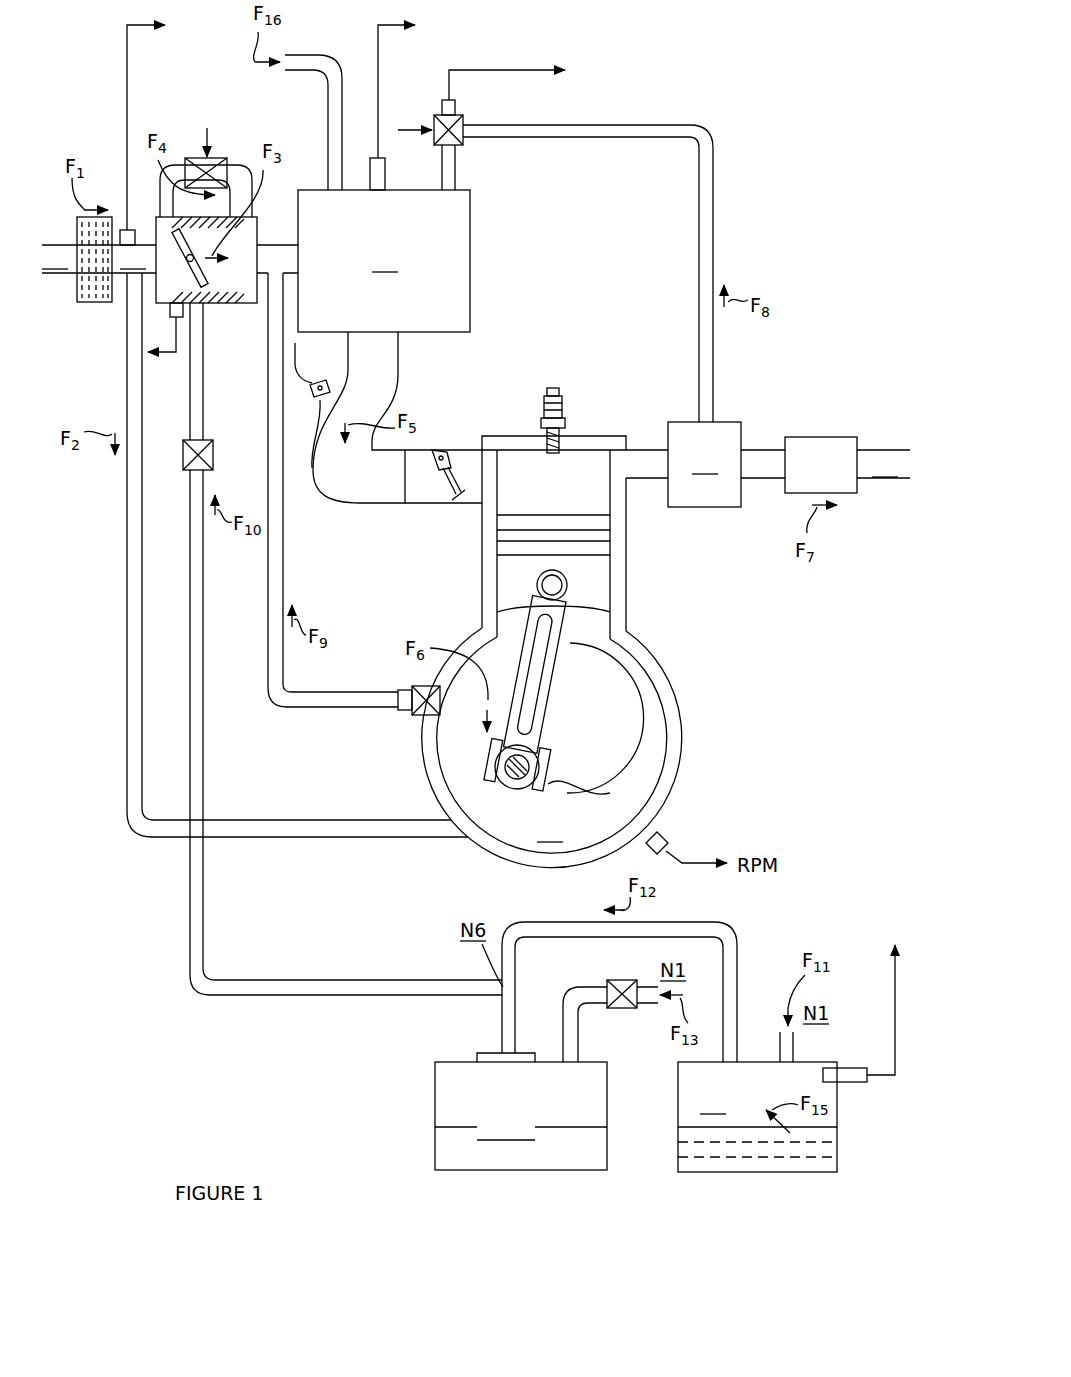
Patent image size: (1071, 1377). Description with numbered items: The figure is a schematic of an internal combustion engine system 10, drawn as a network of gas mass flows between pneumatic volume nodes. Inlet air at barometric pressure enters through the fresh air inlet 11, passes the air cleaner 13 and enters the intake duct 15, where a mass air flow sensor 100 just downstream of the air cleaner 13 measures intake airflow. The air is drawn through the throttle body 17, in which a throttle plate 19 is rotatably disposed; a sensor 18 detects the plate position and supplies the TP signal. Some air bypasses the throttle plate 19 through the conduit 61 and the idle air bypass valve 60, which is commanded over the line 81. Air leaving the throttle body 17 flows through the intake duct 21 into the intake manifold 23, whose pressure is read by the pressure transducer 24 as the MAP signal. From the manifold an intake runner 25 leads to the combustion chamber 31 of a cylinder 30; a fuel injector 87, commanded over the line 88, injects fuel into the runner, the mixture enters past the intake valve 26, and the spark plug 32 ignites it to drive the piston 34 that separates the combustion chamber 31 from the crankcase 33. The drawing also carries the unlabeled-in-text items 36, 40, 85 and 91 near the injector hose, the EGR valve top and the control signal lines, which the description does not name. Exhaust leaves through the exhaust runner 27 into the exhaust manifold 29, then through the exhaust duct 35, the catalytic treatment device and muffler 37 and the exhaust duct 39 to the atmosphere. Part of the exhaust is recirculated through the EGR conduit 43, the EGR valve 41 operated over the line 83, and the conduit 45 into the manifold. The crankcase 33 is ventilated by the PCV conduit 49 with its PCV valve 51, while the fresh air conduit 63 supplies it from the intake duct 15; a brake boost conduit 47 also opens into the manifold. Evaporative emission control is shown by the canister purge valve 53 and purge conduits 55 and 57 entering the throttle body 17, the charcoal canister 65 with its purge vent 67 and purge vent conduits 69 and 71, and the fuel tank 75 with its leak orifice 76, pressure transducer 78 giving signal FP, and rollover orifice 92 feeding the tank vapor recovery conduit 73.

The engine system 10 is at (808, 210).
The fresh air inlet 11 is at (60, 274).
The air cleaner 13 is at (97, 304).
The intake duct 15 is at (147, 243).
The throttle body 17 is at (247, 304).
The sensor 18 is at (179, 318).
The throttle plate 19 is at (156, 304).
The intake duct 21 is at (278, 243).
The intake manifold 23 is at (470, 258).
The pressure transducer 24 is at (387, 175).
The intake runner 25 is at (400, 343).
The intake valve 26 is at (437, 450).
The exhaust runner 27 is at (645, 480).
The exhaust manifold 29 is at (712, 507).
The cylinder 30 is at (690, 658).
The combustion chamber 31 is at (597, 462).
The spark plug 32 is at (562, 402).
The crankcase 33 is at (657, 738).
The piston 34 is at (598, 582).
The exhaust duct 35 is at (762, 448).
The PCV hose 36 is at (311, 415).
The catalytic treatment device and muffler 37 is at (803, 437).
The exhaust duct 39 is at (883, 450).
The EGR valve position sensor 40 is at (457, 100).
The EGR valve 41 is at (463, 118).
The exhaust gas recirculation conduit 43 is at (535, 124).
The conduit 45 is at (457, 160).
The pneumatic brake boost conduit 47 is at (307, 53).
The positive crankcase ventilation conduit 49 is at (267, 573).
The PCV valve 51 is at (405, 715).
The canister purge valve 53 is at (213, 455).
The canister purge conduit 55 is at (190, 543).
The canister purge conduit 57 is at (204, 308).
The idle air bypass valve 60 is at (212, 158).
The conduit 61 is at (240, 170).
The fresh air conduit 63 is at (126, 505).
The charcoal canister 65 is at (435, 1143).
The purge vent 67 is at (620, 1008).
The purge vent conduit 69 is at (563, 1030).
The purge vent conduit 71 is at (645, 985).
The tank vapor recovery conduit 73 is at (658, 922).
The fuel tank 75 is at (758, 1060).
The leak orifice 76 is at (797, 1040).
The pressure transducer 78 is at (850, 1083).
The line 81 is at (205, 130).
The line 83 is at (423, 128).
The idle valve control signal 85 is at (183, 455).
The fuel injector 87 is at (318, 378).
The line 88 is at (305, 393).
The fuel injector signal 91 is at (432, 505).
The rollover orifice 92 is at (735, 1060).
The mass air flow sensor 100 is at (121, 230).